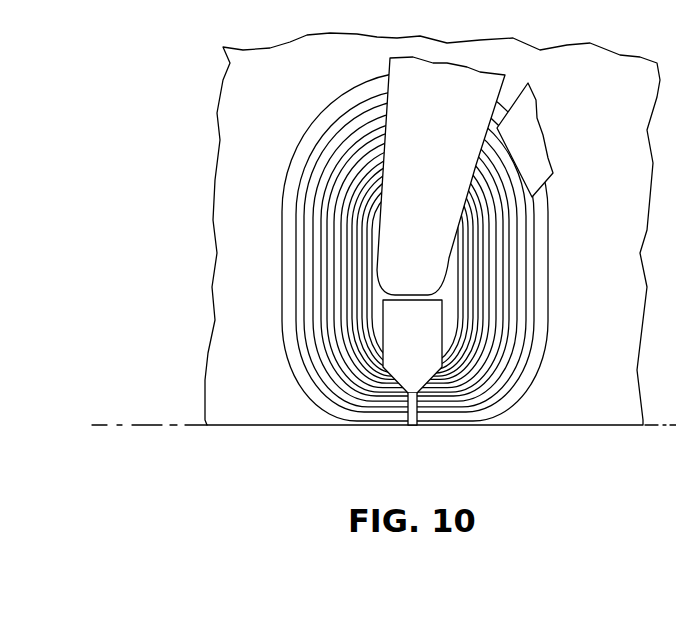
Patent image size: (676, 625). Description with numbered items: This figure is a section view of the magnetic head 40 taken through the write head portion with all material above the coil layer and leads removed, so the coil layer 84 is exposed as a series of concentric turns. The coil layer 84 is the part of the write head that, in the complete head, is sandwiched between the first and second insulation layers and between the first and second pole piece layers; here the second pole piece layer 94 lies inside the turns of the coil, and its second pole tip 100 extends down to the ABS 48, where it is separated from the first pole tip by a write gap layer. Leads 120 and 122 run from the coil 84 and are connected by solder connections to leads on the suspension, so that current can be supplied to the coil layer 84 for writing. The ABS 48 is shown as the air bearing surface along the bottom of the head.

The magnetic head 40 is at (568, 222).
The coil layer 84 is at (518, 322).
The lead 120 is at (445, 172).
The lead 122 is at (537, 130).
The second pole piece layer 94 is at (425, 353).
The second pole tip 100 is at (410, 430).
The ABS 48 is at (147, 425).